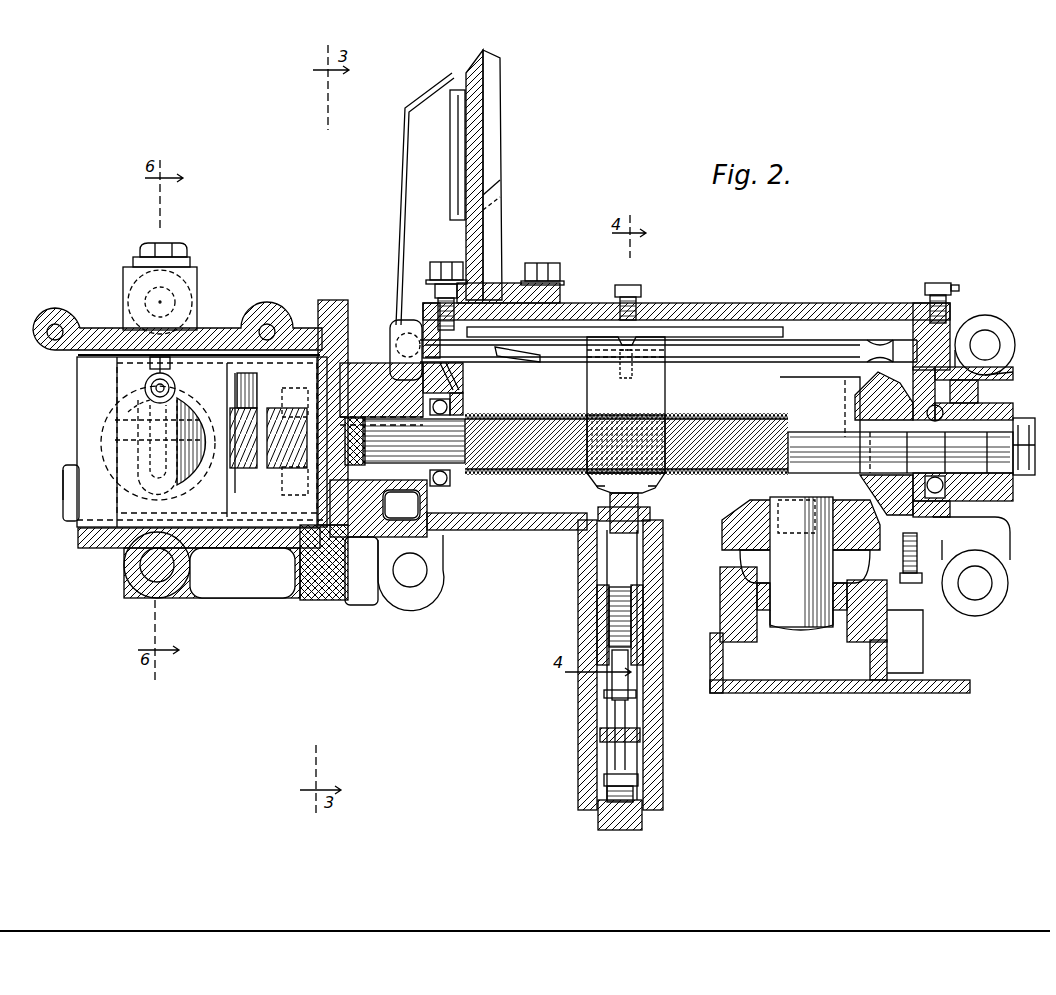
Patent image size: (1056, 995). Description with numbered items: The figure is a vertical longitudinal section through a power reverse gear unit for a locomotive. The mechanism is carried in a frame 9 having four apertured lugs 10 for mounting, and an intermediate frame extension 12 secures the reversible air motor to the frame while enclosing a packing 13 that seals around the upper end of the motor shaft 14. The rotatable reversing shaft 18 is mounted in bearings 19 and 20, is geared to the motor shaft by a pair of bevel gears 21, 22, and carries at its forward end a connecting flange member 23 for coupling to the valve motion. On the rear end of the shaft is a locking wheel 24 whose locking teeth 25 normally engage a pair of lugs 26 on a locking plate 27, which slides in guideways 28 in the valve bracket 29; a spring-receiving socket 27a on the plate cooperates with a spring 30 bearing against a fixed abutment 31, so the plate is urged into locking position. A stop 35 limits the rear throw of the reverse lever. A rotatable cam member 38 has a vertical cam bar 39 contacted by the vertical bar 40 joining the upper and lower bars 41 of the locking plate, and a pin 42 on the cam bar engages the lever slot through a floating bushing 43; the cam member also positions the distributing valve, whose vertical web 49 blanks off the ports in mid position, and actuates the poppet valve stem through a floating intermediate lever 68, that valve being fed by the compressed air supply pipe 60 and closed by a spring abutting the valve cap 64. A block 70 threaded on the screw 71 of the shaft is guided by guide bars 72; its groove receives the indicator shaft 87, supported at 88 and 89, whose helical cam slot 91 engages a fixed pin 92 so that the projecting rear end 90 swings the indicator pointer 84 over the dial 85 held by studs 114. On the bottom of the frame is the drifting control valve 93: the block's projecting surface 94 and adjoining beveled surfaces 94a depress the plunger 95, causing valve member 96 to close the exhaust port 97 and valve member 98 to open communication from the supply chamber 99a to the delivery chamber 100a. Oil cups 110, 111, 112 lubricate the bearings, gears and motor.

The frame 9 is at (700, 308).
The apertured lugs 10 is at (392, 320).
The intermediate frame extension 12 is at (887, 624).
The packing 13 is at (770, 620).
The motor shaft 14 is at (793, 632).
The reversing shaft 18 is at (900, 426).
The bearing 19 is at (450, 492).
The bearing 20 is at (945, 518).
The bevel gear 21 is at (742, 503).
The bevel gear 22 is at (855, 392).
The connecting flange member 23 is at (1026, 475).
The locking wheel 24 is at (401, 505).
The locking teeth 25 is at (345, 543).
The locking lugs 26 is at (328, 345).
The locking plate 27 is at (202, 442).
The spring-receiving socket 27a is at (300, 390).
The guideways 28 is at (85, 355).
The valve bracket 29 is at (300, 560).
The spring 30 is at (237, 406).
The fixed abutment 31 is at (203, 441).
The stop 35 is at (140, 575).
The cam member 38 is at (101, 441).
The cam bar 39 is at (157, 447).
The vertical bar 40 is at (120, 460).
The upper and lower bars 41 is at (182, 508).
The pin 42 is at (145, 386).
The floating bushing 43 is at (151, 402).
The vertical web 49 is at (110, 488).
The compressed air supply pipe 60 is at (175, 298).
The valve cap 64 is at (180, 250).
The floating intermediate lever 68 is at (128, 412).
The block 70 is at (626, 405).
The screw 71 is at (528, 475).
The guide bars 72 is at (758, 327).
The indicator pointer 84 is at (404, 176).
The dial 85 is at (478, 70).
The indicator shaft 87 is at (668, 345).
The shaft support 88 is at (465, 365).
The shaft support 89 is at (913, 330).
The projecting rear end 90 is at (392, 325).
The helical cam slot 91 is at (508, 362).
The fixed pin 92 is at (632, 384).
The drifting control valve 93 is at (578, 596).
The projecting surface 94 is at (640, 493).
The beveled surfaces 94a is at (598, 486).
The plunger 95 is at (610, 505).
The valve member 96 is at (636, 700).
The exhaust port 97 is at (597, 694).
The valve member 98 is at (638, 778).
The supply chamber 99a is at (607, 788).
The delivery chamber 100a is at (600, 740).
The oil cup 110 is at (437, 288).
The oil cup 111 is at (630, 285).
The oil cup 112 is at (950, 290).
The studs 114 is at (520, 262).